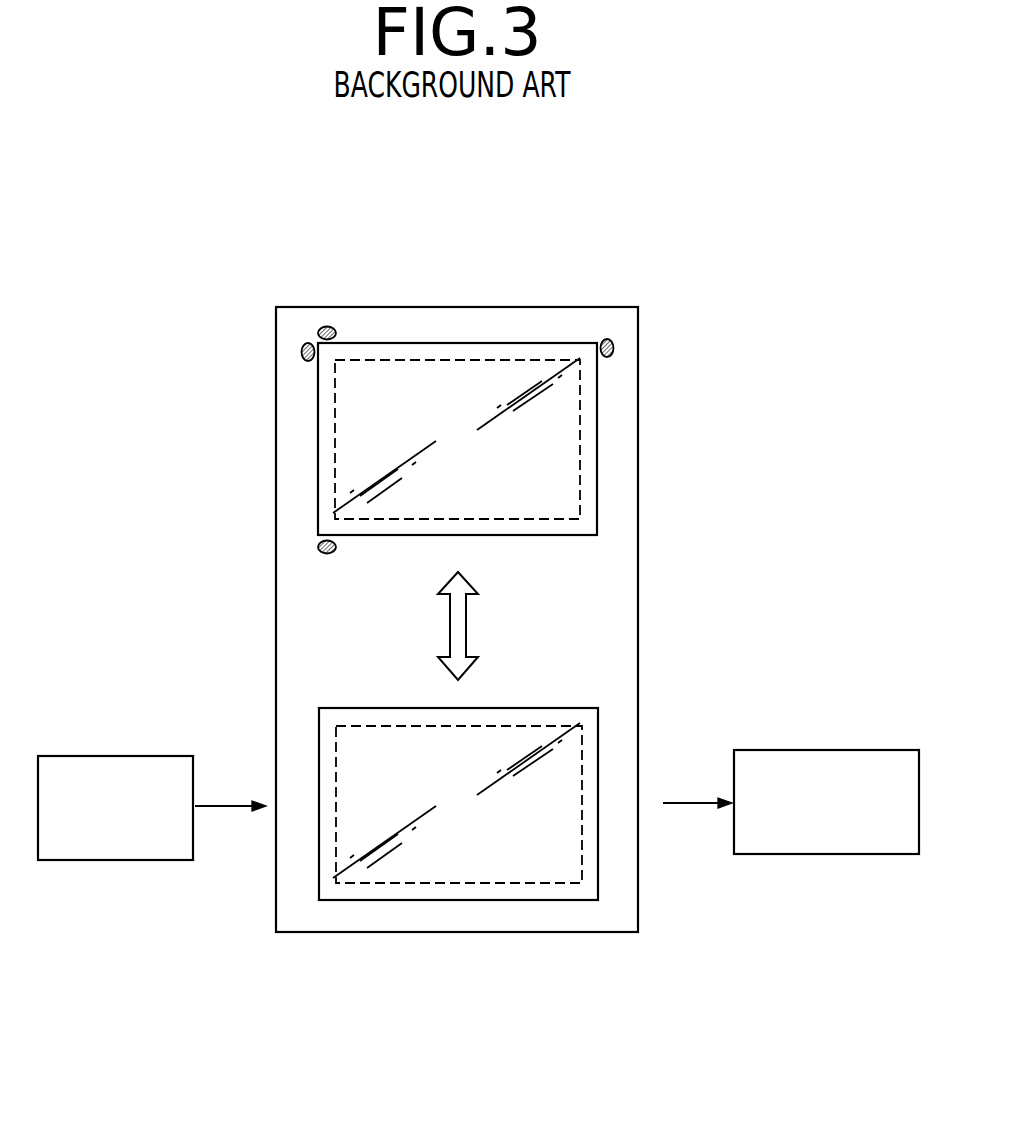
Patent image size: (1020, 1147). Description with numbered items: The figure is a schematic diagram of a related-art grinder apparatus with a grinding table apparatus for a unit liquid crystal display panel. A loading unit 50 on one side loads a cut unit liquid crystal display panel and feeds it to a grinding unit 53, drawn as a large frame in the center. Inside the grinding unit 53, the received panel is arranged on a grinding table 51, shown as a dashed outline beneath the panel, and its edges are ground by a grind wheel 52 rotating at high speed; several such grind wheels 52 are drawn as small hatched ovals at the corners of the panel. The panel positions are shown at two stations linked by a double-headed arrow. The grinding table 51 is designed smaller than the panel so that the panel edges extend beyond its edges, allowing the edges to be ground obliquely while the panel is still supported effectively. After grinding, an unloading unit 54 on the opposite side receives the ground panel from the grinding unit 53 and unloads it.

The loading unit 50 is at (113, 756).
The grinding table 51 is at (520, 883).
The grind wheel 52 is at (306, 343).
The grinding unit 53 is at (638, 490).
The unloading unit 54 is at (825, 750).